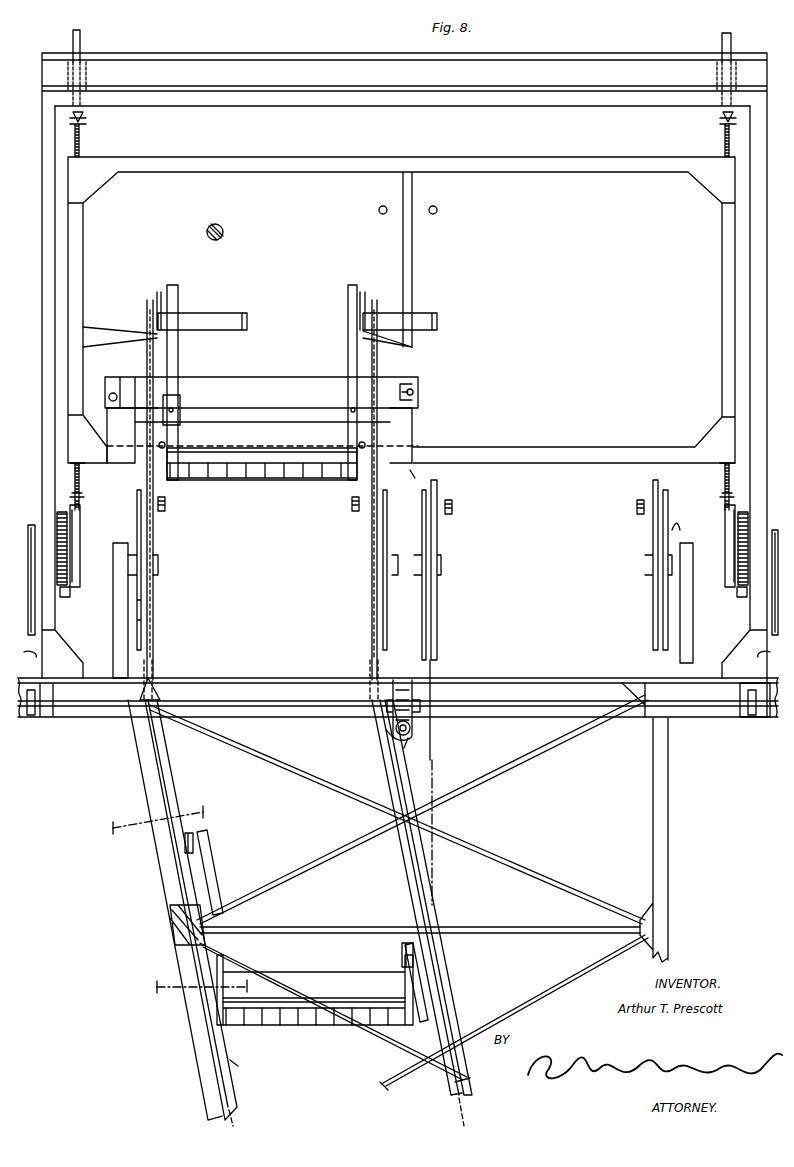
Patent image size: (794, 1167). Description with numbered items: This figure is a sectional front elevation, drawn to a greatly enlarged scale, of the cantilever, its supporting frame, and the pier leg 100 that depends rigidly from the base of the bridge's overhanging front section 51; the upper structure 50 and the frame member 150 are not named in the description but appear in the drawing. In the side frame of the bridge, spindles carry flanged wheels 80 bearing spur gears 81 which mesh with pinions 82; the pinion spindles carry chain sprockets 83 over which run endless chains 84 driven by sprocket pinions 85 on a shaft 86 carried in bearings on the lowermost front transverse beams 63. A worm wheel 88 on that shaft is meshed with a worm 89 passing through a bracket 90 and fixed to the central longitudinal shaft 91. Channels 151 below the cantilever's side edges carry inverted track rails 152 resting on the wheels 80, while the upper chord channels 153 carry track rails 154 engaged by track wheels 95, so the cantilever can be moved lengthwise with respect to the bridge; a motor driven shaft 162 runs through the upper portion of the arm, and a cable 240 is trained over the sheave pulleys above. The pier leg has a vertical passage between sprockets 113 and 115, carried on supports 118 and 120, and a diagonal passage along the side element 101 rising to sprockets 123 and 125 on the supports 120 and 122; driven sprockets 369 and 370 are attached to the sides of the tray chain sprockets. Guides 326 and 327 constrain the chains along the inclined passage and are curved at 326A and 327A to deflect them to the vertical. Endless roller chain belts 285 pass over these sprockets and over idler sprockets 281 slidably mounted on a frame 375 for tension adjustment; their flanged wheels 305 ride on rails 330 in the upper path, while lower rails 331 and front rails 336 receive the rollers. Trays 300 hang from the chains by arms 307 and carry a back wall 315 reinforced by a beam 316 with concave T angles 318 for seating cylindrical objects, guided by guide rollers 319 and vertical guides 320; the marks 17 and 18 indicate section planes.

The top frame beam 50 is at (300, 55).
The frame 150 is at (370, 163).
The track wheels 95 is at (82, 40).
The track rails 154 is at (86, 120).
The channels 153 is at (724, 146).
The shaft 162 is at (227, 238).
The cable 240 is at (437, 213).
The rails 330 is at (238, 305).
The sprockets 281 is at (147, 356).
The frame 375 is at (262, 388).
The guide rollers 319 is at (165, 440).
The rails 331 is at (168, 503).
The rails 336 is at (455, 508).
The sprocket 370 is at (404, 479).
The channels 151 is at (80, 474).
The track rails 152 is at (80, 500).
The flanged wheels 80 is at (82, 523).
The spur gears 81 is at (82, 541).
The pinions 82 is at (70, 594).
The chain sprockets 83 is at (28, 530).
The endless chains 84 is at (397, 661).
The sprocket pinions 85 is at (28, 718).
The shaft 86 is at (722, 706).
The support 122 is at (113, 624).
The support 118 is at (692, 639).
The sprocket 125 is at (155, 526).
The sprocket 123 is at (372, 536).
The sprocket 115 is at (440, 527).
The sprocket 113 is at (655, 535).
The sprocket 369 is at (686, 520).
The support 120 is at (403, 613).
The front section 51 is at (270, 629).
The front transverse beams 63 is at (546, 688).
The curved guide portion 326A is at (160, 700).
The curved guide portion 327A is at (368, 700).
The bracket 90 is at (415, 690).
The worm wheel 88 is at (378, 738).
The worm 89 is at (403, 748).
The shaft 91 is at (410, 730).
The pier leg 100 is at (655, 797).
The guides 326 is at (172, 760).
The guides 327 is at (440, 997).
The roller chain belts 285 is at (232, 1112).
The flanged wheels 305 is at (400, 850).
The arms 307 is at (210, 880).
The vertical guides 320 is at (430, 968).
The section line 17 is at (158, 821).
The section line 18 is at (197, 986).
The trays 300 is at (350, 1030).
The back wall 315 is at (308, 980).
The beam 316 is at (362, 1004).
The T angles 318 is at (278, 1022).
The side element 101 is at (240, 1066).